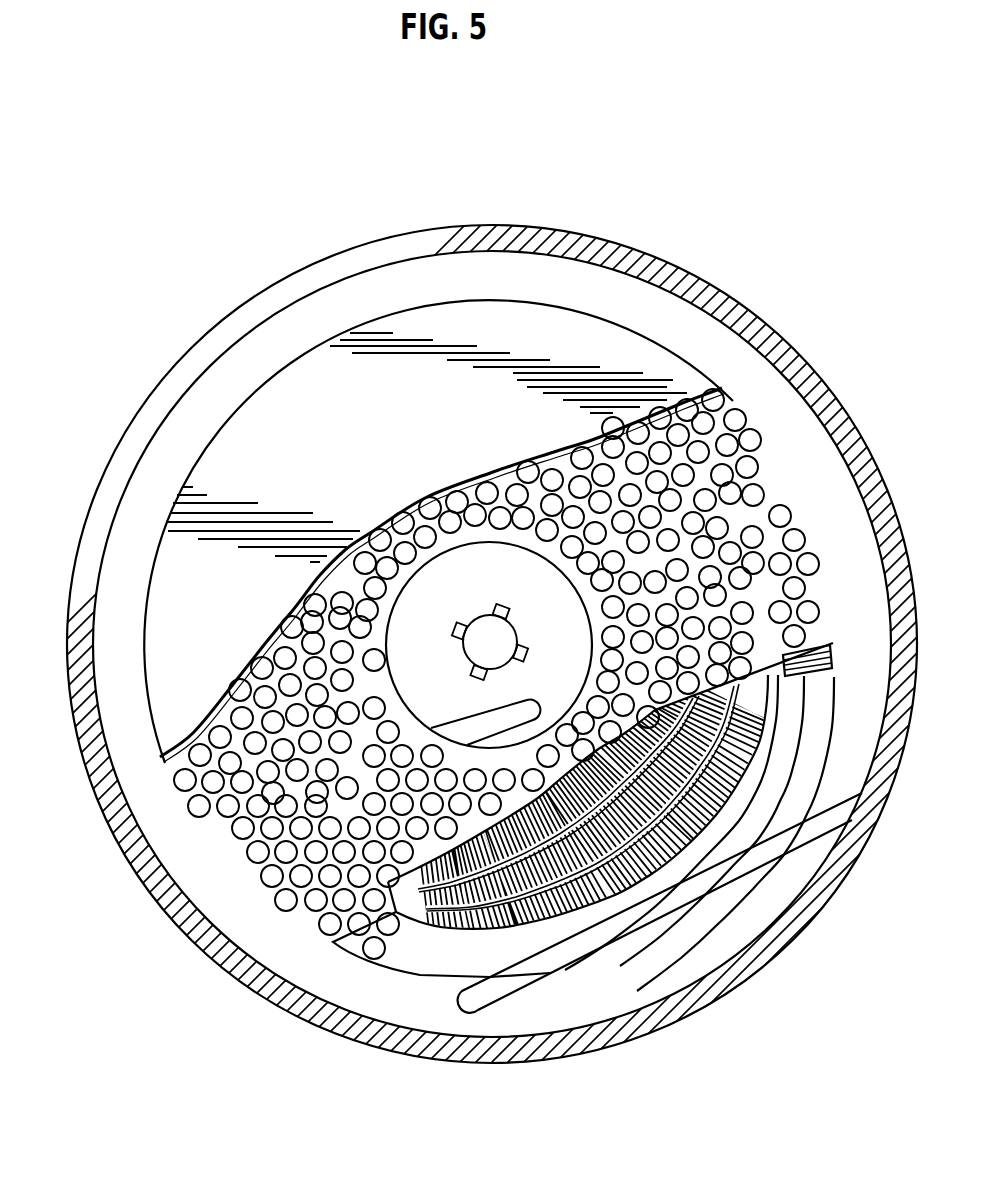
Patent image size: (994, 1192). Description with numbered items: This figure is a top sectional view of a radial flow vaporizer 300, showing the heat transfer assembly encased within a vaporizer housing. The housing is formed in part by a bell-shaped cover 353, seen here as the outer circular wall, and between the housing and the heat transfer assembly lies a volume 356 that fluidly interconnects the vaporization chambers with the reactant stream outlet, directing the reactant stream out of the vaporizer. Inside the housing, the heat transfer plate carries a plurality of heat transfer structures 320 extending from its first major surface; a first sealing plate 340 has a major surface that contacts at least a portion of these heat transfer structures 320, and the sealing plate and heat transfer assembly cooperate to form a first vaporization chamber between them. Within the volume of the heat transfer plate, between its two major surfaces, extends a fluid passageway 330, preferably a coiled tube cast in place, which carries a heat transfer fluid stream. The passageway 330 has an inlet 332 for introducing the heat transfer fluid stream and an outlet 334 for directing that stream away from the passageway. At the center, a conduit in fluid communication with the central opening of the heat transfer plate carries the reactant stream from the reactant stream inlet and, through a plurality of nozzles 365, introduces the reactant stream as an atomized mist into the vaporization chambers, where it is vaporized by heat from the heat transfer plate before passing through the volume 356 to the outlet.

The radial flow vaporizer 300 is at (363, 238).
The heat transfer structures 320 is at (213, 833).
The fluid passageway 330 is at (390, 908).
The inlet 332 is at (533, 708).
The outlet 334 is at (464, 1003).
The first sealing plate 340 is at (250, 445).
The bell-shaped cover 353 is at (790, 348).
The volume 356 is at (283, 333).
The nozzles 365 is at (495, 605).